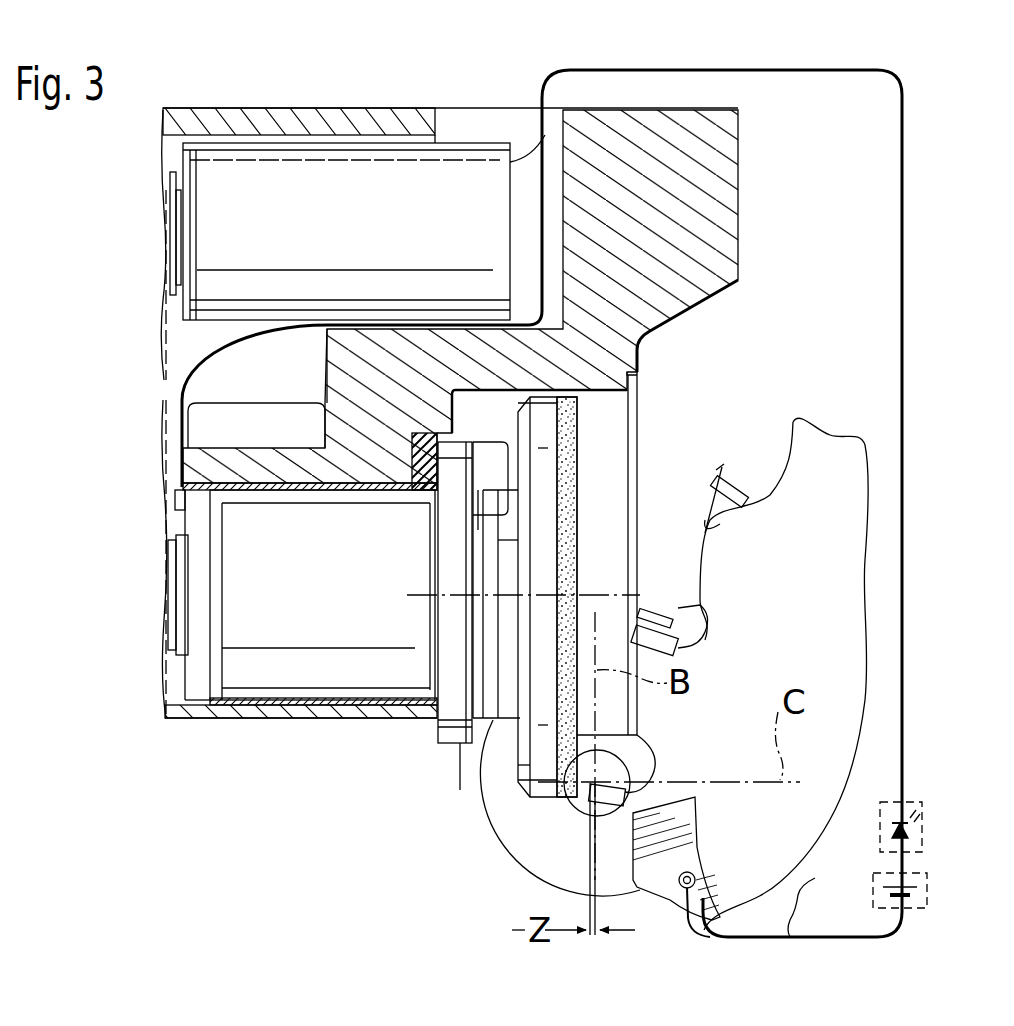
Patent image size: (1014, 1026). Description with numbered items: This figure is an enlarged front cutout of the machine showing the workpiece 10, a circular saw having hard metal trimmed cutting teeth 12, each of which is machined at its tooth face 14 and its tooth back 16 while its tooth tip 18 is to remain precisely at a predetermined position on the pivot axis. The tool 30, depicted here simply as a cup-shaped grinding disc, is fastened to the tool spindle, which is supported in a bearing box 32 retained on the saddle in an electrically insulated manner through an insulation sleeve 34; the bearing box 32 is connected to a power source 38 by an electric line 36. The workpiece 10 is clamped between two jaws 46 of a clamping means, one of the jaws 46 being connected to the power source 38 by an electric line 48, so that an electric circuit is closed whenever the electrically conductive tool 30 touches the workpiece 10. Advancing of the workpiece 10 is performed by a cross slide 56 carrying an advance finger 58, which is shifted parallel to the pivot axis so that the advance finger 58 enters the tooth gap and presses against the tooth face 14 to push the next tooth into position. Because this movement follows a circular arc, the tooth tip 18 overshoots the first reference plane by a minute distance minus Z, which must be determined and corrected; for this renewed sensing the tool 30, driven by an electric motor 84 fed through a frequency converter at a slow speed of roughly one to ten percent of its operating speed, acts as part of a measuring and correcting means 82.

The workpiece 10 is at (860, 597).
The cutting teeth 12 is at (720, 523).
The tooth face 14 is at (745, 480).
The tooth back 16 is at (716, 476).
The tooth tip 18 is at (720, 470).
The tool 30 is at (553, 797).
The bearing box 32 is at (317, 591).
The insulation sleeve 34 is at (272, 706).
The electric line 36 is at (904, 172).
The power source 38 is at (917, 893).
The jaws 46 is at (684, 843).
The electric line 48 is at (817, 899).
The cross slide 56 is at (694, 627).
The advance finger 58 is at (658, 618).
The measuring and correcting means 82 is at (380, 808).
The electric motor 84 is at (357, 238).